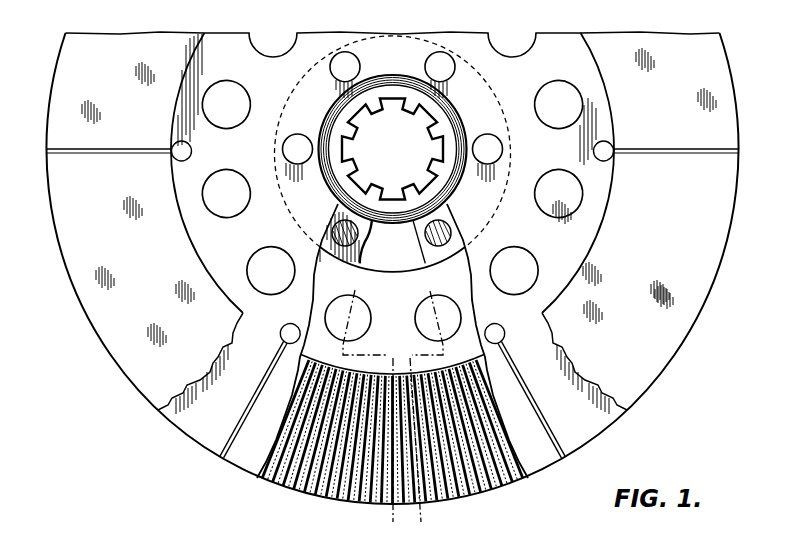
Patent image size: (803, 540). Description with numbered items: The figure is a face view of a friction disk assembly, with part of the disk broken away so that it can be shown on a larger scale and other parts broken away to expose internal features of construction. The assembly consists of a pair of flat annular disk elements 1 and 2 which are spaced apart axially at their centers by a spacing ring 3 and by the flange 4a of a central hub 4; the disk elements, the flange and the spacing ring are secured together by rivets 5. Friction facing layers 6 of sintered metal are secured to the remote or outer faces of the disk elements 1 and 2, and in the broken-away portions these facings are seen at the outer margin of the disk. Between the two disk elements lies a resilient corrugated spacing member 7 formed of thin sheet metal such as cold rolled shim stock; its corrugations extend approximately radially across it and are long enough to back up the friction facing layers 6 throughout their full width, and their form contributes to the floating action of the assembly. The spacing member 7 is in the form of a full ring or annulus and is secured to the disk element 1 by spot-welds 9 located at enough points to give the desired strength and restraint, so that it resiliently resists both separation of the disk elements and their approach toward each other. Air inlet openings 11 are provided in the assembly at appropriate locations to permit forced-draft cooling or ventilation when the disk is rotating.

The disk element 1 is at (474, 318).
The disk element 2 is at (181, 434).
The spacing ring 3 is at (480, 72).
The hub 4 is at (345, 132).
The flange 4a is at (388, 262).
The rivets 5 is at (283, 150).
The friction facing layers 6 is at (65, 81).
The resilient corrugated spacing member 7 is at (262, 474).
The spot-welds 9 is at (353, 383).
The air inlet openings 11 is at (229, 100).